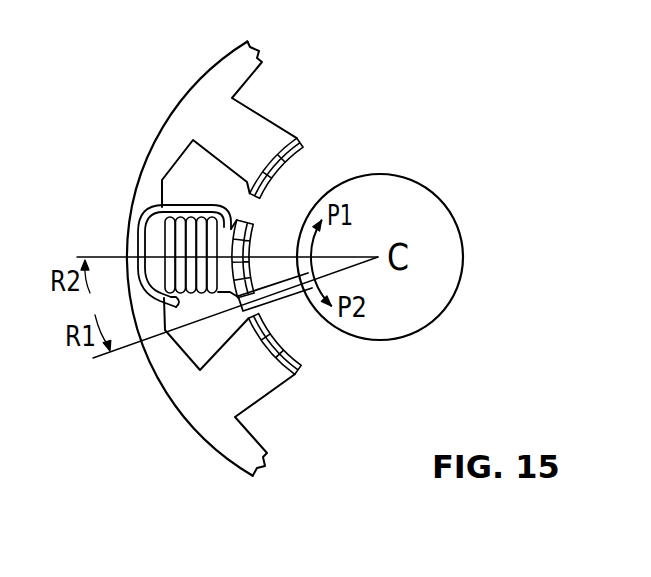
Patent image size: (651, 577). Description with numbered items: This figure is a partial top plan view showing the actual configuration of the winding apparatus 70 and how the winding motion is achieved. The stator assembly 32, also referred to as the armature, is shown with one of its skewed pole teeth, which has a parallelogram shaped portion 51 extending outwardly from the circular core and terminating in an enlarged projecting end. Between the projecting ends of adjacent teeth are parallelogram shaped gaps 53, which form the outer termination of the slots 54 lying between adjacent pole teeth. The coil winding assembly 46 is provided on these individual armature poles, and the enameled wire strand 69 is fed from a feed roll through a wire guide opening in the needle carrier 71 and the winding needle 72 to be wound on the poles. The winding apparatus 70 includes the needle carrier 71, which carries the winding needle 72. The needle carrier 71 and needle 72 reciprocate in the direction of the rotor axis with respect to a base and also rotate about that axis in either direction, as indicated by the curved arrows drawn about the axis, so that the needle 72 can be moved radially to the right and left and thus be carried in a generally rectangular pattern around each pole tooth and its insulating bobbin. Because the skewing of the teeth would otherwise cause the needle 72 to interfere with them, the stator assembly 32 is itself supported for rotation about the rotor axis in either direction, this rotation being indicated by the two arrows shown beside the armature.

The stator assembly 32 is at (133, 162).
The coil winding assembly 46 is at (194, 306).
The parallelogram shaped portions 51 is at (257, 133).
The parallelogram shaped gaps 53 is at (285, 210).
The slots 54 is at (200, 165).
The enameled wire strand 69 is at (144, 218).
The winding apparatus 70 is at (451, 201).
The needle carrier 71 is at (433, 302).
The winding needle 72 is at (304, 292).